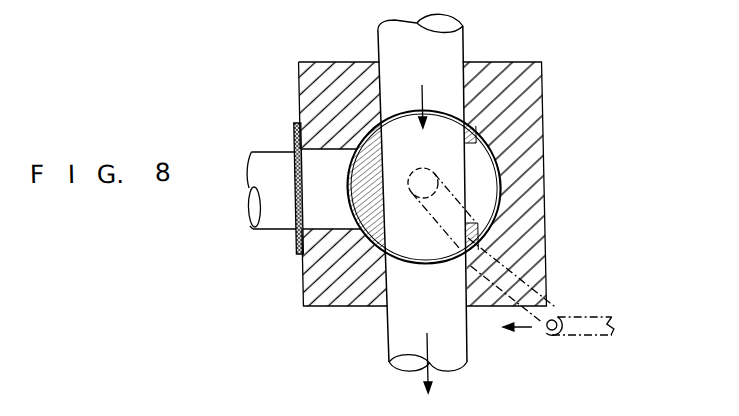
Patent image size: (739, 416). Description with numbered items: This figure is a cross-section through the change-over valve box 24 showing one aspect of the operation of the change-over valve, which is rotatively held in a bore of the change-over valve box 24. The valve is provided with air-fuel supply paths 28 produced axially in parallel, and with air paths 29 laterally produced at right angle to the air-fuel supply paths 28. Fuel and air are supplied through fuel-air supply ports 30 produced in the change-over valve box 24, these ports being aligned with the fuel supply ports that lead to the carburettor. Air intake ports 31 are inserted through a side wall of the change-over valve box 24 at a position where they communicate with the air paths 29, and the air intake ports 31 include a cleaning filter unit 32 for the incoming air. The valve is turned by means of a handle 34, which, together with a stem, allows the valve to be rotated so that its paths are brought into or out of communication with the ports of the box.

The change-over valve box 24 is at (522, 100).
The air-fuel supply paths 28 is at (399, 243).
The air paths 29 is at (480, 183).
The fuel-air supply ports 30 is at (406, 328).
The air intake ports 31 is at (318, 163).
The cleaning filter unit 32 is at (297, 205).
The handle 34 is at (548, 308).